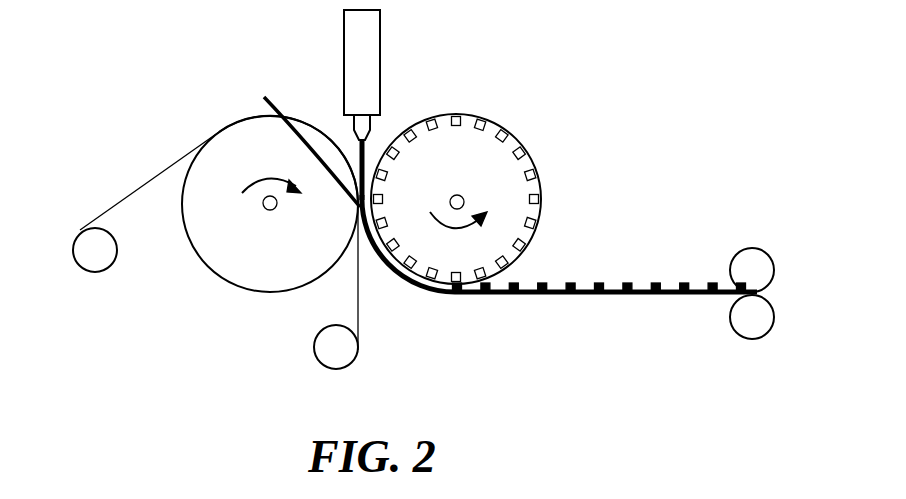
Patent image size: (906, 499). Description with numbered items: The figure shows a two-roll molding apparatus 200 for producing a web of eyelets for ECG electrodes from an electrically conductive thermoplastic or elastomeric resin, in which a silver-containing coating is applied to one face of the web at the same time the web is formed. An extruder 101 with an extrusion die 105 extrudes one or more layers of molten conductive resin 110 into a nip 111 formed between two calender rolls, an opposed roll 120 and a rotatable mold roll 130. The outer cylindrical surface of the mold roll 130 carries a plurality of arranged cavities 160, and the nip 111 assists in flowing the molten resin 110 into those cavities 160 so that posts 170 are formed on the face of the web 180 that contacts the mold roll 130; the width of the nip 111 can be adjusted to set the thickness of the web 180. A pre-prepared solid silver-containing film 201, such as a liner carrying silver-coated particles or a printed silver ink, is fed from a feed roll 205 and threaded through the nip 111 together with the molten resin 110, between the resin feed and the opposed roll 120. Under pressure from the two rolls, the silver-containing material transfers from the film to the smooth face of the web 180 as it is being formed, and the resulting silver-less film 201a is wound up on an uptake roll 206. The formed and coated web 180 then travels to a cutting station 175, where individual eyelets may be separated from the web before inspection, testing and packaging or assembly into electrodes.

The two-roll molding apparatus 200 is at (493, 50).
The extruder 101 is at (352, 30).
The extrusion die 105 is at (357, 128).
The molten conductive resin 110 is at (367, 152).
The nip 111 is at (266, 97).
The opposed roll 120 is at (235, 243).
The mold roll 130 is at (492, 163).
The cavities 160 is at (527, 150).
The posts 170 is at (660, 282).
The web 180 is at (562, 297).
The cutting station 175 is at (752, 323).
The pre-prepared solid silver-containing film 201 is at (140, 188).
The silver-less film 201a is at (360, 303).
The feed roll 205 is at (93, 257).
The uptake roll 206 is at (332, 350).